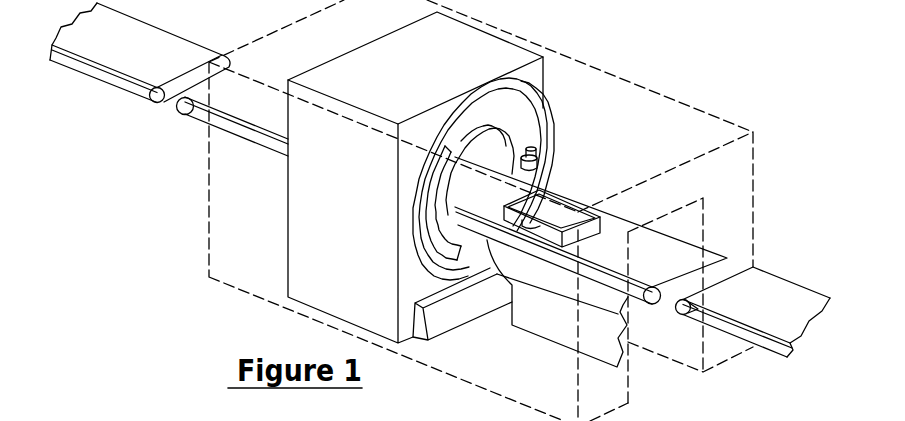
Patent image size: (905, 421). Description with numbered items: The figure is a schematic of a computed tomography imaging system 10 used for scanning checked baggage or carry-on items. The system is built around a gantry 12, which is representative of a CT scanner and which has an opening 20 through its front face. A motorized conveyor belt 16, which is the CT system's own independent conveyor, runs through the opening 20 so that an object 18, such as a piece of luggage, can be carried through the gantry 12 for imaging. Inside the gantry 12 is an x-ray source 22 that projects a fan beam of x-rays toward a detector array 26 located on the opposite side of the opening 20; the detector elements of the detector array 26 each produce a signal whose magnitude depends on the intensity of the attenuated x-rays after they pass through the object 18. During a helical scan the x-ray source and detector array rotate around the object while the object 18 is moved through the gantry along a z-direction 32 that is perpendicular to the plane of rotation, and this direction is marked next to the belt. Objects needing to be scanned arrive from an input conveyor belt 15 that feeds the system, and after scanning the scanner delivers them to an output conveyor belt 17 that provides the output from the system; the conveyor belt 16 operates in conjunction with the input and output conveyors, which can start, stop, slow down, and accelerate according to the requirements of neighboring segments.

The CT imaging system 10 is at (688, 112).
The gantry 12 is at (523, 116).
The input conveyor belt 15 is at (768, 318).
The motorized conveyor belt 16 is at (607, 253).
The output conveyor belt 17 is at (128, 50).
The object 18 is at (558, 207).
The opening 20 is at (505, 140).
The x-ray source 22 is at (541, 160).
The detector array 26 is at (440, 222).
The z-direction 32 is at (702, 226).